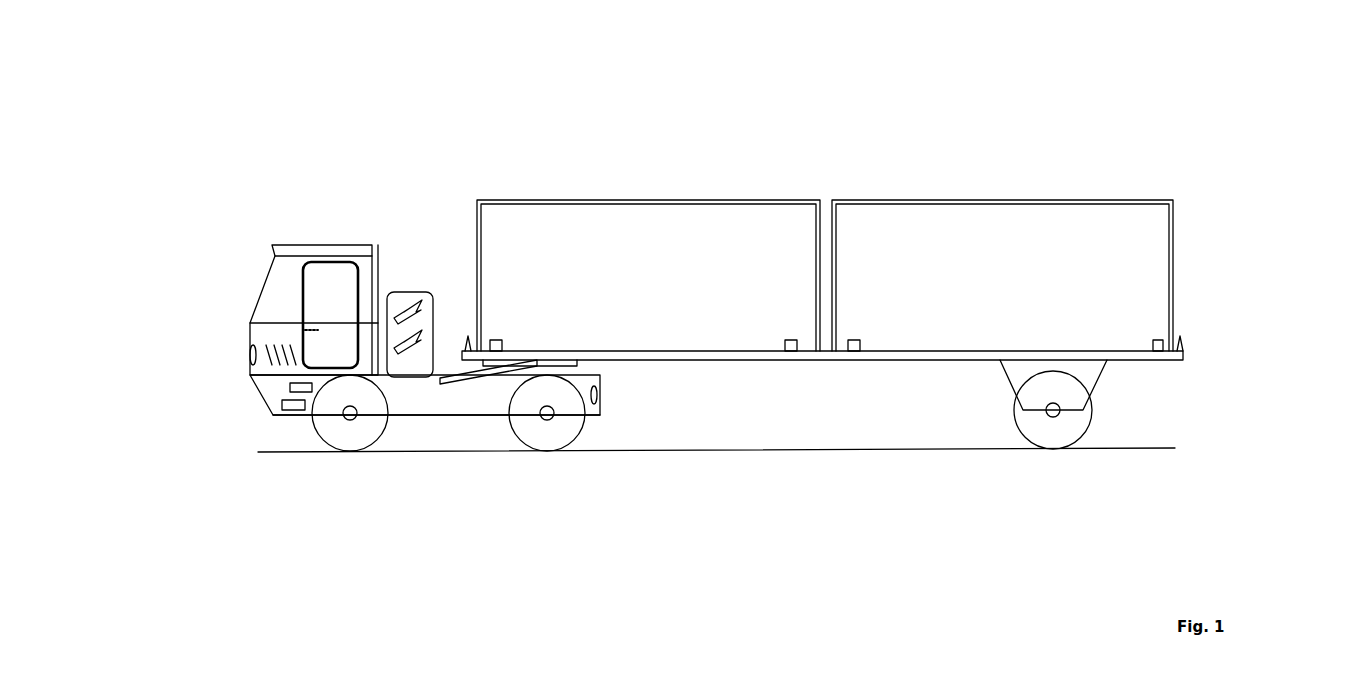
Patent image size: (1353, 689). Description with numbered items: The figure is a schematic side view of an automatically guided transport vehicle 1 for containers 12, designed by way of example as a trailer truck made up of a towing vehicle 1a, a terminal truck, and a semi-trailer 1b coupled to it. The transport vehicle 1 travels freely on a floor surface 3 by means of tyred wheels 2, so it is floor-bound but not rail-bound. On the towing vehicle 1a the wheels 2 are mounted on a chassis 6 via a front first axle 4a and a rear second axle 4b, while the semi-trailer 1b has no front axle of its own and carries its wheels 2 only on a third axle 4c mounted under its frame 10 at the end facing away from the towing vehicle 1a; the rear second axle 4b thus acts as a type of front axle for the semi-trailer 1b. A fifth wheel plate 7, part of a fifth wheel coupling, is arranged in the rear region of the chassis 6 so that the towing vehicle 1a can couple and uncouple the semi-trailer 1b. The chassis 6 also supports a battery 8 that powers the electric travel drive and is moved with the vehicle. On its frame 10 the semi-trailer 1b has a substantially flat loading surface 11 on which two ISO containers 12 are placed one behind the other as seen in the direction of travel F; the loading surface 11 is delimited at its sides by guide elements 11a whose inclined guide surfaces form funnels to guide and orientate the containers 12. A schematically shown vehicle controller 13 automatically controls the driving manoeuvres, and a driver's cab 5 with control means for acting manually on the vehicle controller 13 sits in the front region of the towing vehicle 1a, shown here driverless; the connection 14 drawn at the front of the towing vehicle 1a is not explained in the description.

The transport vehicle 1 is at (708, 140).
The towing vehicle 1a is at (323, 215).
The semi-trailer 1b is at (835, 180).
The wheels 2 is at (328, 430).
The floor surface 3 is at (703, 452).
The front first axle 4a is at (350, 420).
The rear second axle 4b is at (547, 420).
The third axle 4c is at (1058, 417).
The driver's cab 5 is at (287, 280).
The chassis 6 is at (427, 398).
The fifth wheel plate 7 is at (466, 385).
The battery 8 is at (415, 298).
The frame 10 is at (921, 362).
The loading surface 11 is at (738, 350).
The guide elements 11a is at (465, 338).
The containers 12 is at (630, 268).
The vehicle controller 13 is at (283, 405).
The connection 14 is at (290, 387).
The direction of travel F is at (1320, 140).